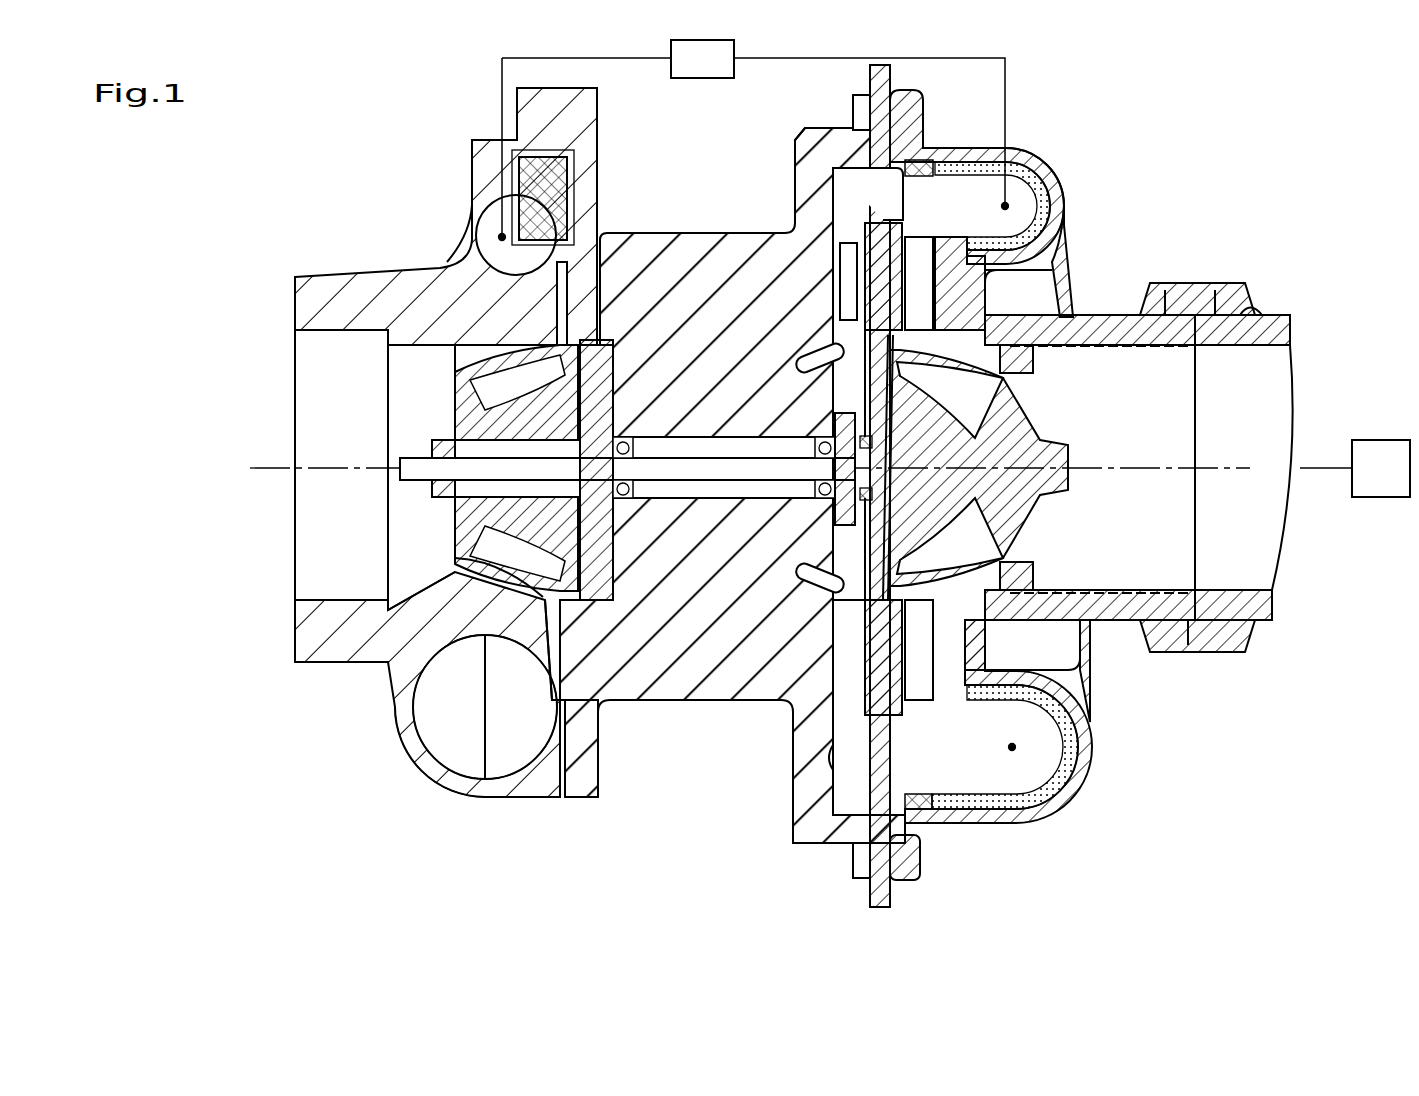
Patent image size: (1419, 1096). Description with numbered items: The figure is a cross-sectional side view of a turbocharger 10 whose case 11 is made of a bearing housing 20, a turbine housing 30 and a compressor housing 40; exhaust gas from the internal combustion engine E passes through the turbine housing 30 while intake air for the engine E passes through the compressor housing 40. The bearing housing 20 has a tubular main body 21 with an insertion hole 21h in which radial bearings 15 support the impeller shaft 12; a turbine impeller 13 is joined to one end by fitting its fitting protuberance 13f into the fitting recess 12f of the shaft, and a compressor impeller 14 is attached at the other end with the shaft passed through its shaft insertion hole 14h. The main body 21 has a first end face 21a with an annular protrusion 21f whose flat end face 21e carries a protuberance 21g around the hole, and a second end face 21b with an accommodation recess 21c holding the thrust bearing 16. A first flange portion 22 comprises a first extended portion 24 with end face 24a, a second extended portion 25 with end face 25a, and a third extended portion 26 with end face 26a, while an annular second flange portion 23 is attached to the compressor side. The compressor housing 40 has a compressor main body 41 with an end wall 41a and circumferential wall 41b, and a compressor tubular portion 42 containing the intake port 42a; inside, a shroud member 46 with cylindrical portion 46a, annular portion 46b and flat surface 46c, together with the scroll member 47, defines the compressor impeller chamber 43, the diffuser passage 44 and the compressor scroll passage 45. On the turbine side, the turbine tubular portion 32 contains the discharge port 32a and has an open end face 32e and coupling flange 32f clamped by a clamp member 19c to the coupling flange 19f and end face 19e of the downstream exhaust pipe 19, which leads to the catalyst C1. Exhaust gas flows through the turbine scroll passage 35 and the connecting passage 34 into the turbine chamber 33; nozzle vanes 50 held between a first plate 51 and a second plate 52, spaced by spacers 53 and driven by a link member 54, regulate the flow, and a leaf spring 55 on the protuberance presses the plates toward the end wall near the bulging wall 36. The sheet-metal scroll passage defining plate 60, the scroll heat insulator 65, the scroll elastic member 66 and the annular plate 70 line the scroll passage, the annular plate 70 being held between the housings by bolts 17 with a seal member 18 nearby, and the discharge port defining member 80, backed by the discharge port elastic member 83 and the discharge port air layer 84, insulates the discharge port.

The turbocharger 10 is at (337, 92).
The case 11 is at (790, 136).
The impeller shaft 12 is at (710, 485).
The fitting recess 12f is at (825, 515).
The turbine impeller 13 is at (1035, 498).
The fitting protuberance 13f is at (840, 430).
The compressor impeller 14 is at (455, 500).
The shaft insertion hole 14h is at (438, 446).
The radial bearings 15 is at (625, 500).
The thrust bearing 16 is at (608, 396).
The bolts 17 is at (855, 100).
The seal member 18 is at (920, 860).
The downstream exhaust pipe 19 is at (1290, 325).
The clamp member 19c is at (1245, 310).
The end face 19e is at (1188, 645).
The coupling flange 19f is at (1215, 283).
The bearing housing 20 is at (708, 232).
The main body 21 is at (712, 703).
The first end face 21a is at (830, 650).
The second end face 21b is at (562, 657).
The accommodation recess 21c is at (606, 338).
The end face 21e is at (898, 540).
The protrusion 21f is at (828, 610).
The protuberance 21g is at (895, 455).
The insertion hole 21h is at (692, 437).
The first flange portion 22 is at (793, 840).
The second flange portion 23 is at (600, 770).
The first extended portion 24 is at (793, 785).
The end face 24a is at (825, 758).
The second extended portion 25 is at (830, 822).
The end face 25a is at (922, 797).
The third extended portion 26 is at (870, 895).
The end face 26a is at (890, 895).
The turbine housing 30 is at (915, 98).
The turbine tubular portion 32 is at (1090, 316).
The discharge port 32a is at (1160, 432).
The open end face 32e is at (1245, 632).
The coupling flange 32f is at (1170, 283).
The turbine chamber 33 is at (1015, 373).
The connecting passage 34 is at (972, 650).
The turbine scroll passage 35 is at (1085, 790).
The bulging wall 36 is at (1066, 220).
The compressor housing 40 is at (470, 145).
The compressor main body 41 is at (470, 175).
The end wall 41a is at (470, 200).
The circumferential wall 41b is at (560, 95).
The compressor tubular portion 42 is at (332, 274).
The intake port 42a is at (320, 503).
The compressor impeller chamber 43 is at (456, 558).
The diffuser passage 44 is at (535, 665).
The compressor scroll passage 45 is at (453, 710).
The shroud member 46 is at (425, 300).
The cylindrical portion 46a is at (440, 347).
The annular portion 46b is at (563, 268).
The flat surface 46c is at (553, 622).
The scroll member 47 is at (572, 182).
The nozzle vanes 50 is at (855, 320).
The first plate 51 is at (880, 270).
The second plate 52 is at (967, 300).
The spacers 53 is at (920, 262).
The link member 54 is at (845, 270).
The leaf spring 55 is at (905, 380).
The scroll passage defining plate 60 is at (1030, 165).
The scroll heat insulator 65 is at (1062, 190).
The scroll elastic member 66 is at (928, 155).
The annular plate 70 is at (900, 190).
The discharge port defining member 80 is at (1105, 600).
The discharge port elastic member 83 is at (1040, 598).
The discharge port air layer 84 is at (1125, 320).
The internal combustion engine E is at (703, 79).
The catalyst C1 is at (1382, 498).